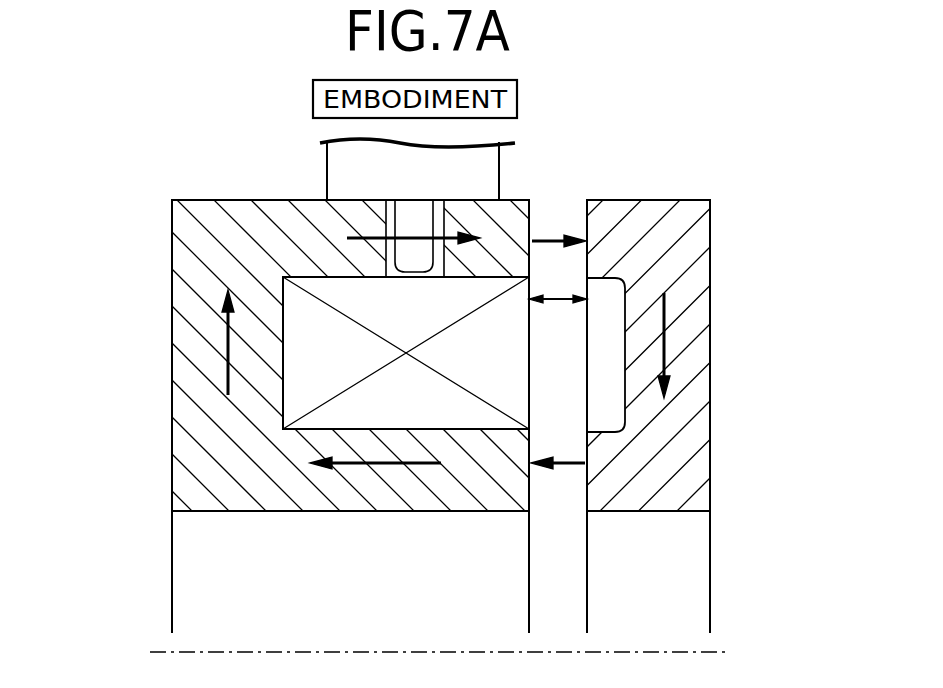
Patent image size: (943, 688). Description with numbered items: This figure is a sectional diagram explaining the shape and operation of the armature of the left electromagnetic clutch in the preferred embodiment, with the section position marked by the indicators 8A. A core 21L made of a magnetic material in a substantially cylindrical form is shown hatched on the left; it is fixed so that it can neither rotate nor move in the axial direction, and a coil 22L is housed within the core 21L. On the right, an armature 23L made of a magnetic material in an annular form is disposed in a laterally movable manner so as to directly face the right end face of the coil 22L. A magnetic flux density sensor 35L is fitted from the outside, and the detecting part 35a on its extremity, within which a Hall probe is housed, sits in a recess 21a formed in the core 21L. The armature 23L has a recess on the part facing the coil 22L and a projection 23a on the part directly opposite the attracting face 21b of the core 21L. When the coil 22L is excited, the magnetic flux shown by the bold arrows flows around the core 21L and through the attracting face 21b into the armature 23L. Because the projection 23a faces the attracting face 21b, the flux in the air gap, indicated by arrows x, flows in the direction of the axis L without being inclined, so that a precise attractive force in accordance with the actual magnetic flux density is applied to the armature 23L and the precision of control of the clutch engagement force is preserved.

The core 21L is at (165, 383).
The recess 21a is at (397, 206).
The attracting face 21b is at (532, 201).
The coil 22L is at (422, 413).
The armature 23L is at (628, 188).
The projection 23a is at (587, 216).
The magnetic flux density sensor 35L is at (318, 175).
The detecting part 35a is at (416, 255).
The section line 8A is at (150, 229).
The arrows x is at (546, 239).
The axis L is at (667, 652).